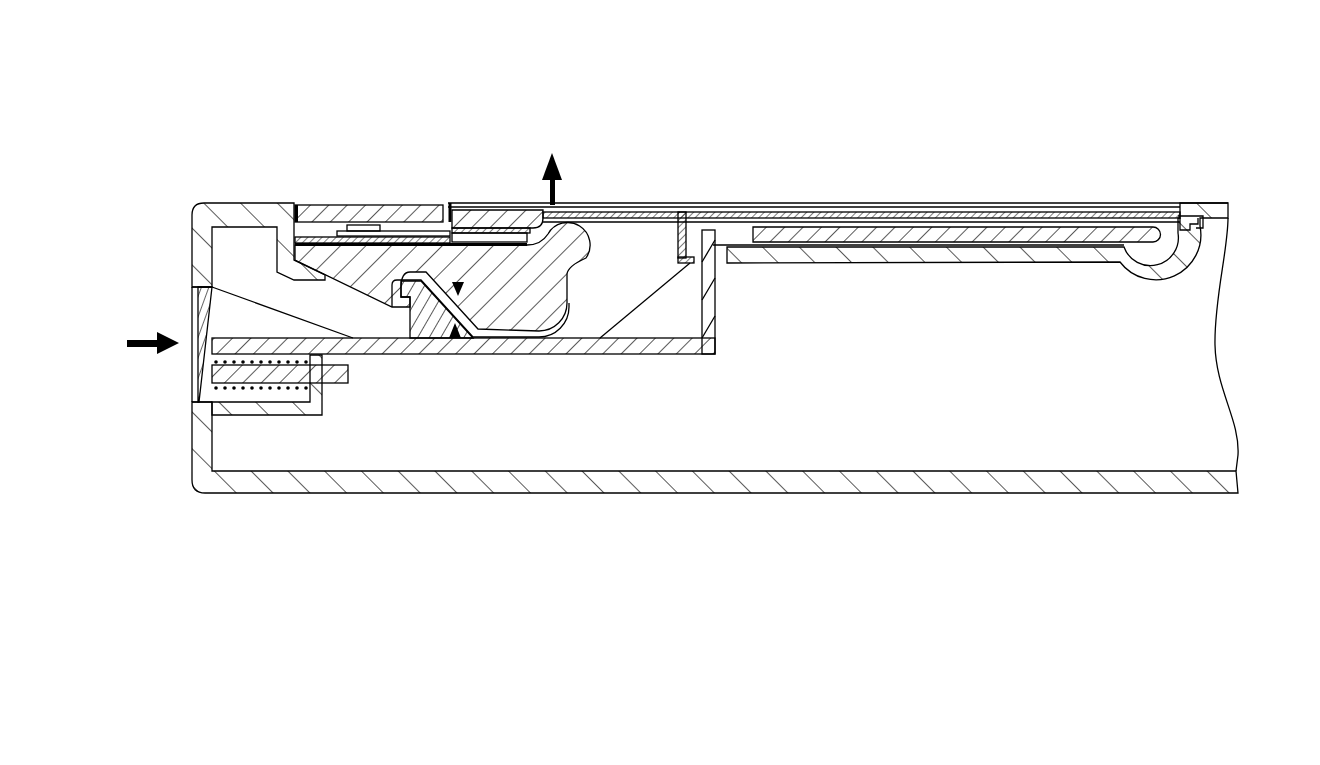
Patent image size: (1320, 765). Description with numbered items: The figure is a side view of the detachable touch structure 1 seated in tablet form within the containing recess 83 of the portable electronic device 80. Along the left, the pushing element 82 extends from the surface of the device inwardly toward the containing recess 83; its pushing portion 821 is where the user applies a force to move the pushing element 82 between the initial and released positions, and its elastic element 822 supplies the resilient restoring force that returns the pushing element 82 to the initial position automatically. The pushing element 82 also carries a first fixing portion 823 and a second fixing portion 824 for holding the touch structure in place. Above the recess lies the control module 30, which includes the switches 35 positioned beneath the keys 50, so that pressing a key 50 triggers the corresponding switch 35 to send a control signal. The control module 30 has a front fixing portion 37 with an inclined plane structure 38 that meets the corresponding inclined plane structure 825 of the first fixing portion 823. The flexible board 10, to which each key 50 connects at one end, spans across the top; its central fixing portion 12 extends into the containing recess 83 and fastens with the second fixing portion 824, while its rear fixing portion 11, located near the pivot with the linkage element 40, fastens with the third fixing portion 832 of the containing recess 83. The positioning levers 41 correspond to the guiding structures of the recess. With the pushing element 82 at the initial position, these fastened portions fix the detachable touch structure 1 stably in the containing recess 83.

The detachable touch structure 1 is at (814, 136).
The portable electronic device 80 is at (186, 172).
The pushing portion 821 is at (212, 312).
The pushing element 82 is at (417, 402).
The elastic element 822 is at (263, 390).
The first fixing portion 823 is at (422, 332).
The second fixing portion 824 is at (712, 282).
The corresponding inclined plane structure 825 is at (455, 340).
The control module 30 is at (525, 307).
The containing recess 83 is at (585, 305).
The key 50 is at (311, 210).
The switch 35 is at (356, 228).
The front fixing portion 37 is at (401, 240).
The inclined plane structure 38 is at (458, 282).
The positioning lever 41 is at (613, 232).
The central fixing portion 12 is at (681, 214).
The flexible board 10 is at (866, 232).
The rear fixing portion 11 is at (1186, 214).
The third fixing portion 832 is at (1204, 222).
The linkage element 40 is at (913, 228).